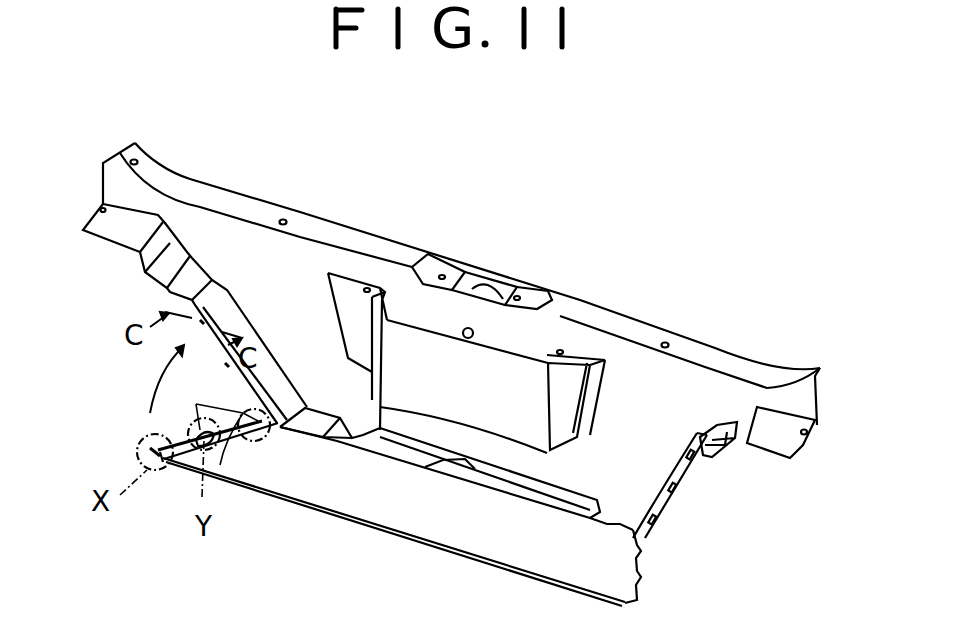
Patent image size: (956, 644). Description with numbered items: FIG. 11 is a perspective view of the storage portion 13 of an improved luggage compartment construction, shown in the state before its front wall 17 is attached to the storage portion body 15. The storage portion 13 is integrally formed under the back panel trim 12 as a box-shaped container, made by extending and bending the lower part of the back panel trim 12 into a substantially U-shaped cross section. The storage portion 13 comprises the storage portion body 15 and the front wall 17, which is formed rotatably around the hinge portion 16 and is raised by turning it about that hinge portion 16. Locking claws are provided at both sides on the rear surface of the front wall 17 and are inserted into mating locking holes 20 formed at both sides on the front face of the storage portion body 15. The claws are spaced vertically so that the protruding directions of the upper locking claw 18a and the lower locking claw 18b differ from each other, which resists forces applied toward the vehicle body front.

The back panel trim 12 is at (258, 187).
The storage portion 13 is at (660, 432).
The storage portion body 15 is at (647, 513).
The hinge portion 16 is at (400, 467).
The front wall 17 is at (497, 547).
The upper locking claw 18a is at (153, 447).
The lower locking claw 18b is at (202, 418).
The locking hole 20 is at (197, 320).